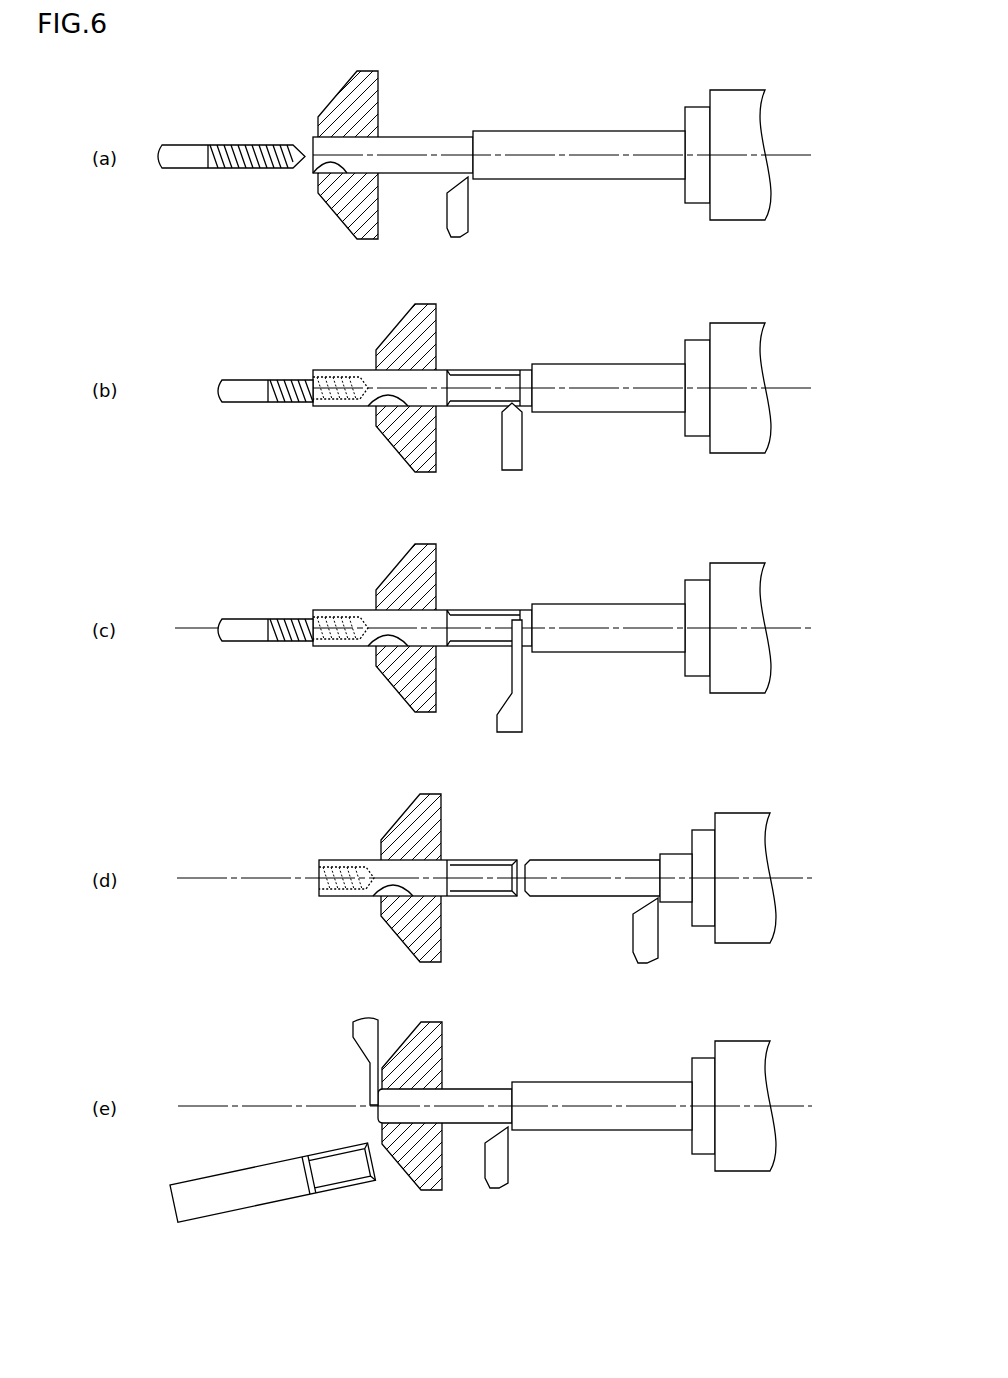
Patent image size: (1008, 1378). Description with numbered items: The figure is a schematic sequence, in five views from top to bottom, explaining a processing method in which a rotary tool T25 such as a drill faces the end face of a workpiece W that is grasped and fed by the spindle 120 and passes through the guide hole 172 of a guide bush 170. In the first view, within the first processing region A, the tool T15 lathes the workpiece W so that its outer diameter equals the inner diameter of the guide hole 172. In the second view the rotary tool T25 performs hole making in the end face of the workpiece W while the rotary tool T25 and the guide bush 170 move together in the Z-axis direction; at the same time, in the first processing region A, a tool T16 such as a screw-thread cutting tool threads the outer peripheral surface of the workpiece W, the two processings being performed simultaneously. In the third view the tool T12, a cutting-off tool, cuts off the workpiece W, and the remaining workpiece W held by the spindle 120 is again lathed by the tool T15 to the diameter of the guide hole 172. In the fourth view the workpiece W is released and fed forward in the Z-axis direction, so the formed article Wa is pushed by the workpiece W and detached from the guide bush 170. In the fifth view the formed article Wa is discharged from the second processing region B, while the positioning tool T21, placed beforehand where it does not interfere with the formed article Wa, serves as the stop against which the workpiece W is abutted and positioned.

The guide bush 170 is at (376, 69).
The guide hole 172 is at (312, 164).
The spindle 120 is at (706, 87).
The workpiece W is at (433, 134).
The formed article Wa is at (461, 857).
The first processing region A is at (498, 82).
The second processing region B is at (267, 352).
The rotary tool T25 is at (259, 143).
The tool T15 is at (471, 210).
The tool T16 is at (524, 441).
The tool T12 is at (509, 688).
The positioning tool T21 is at (351, 1018).